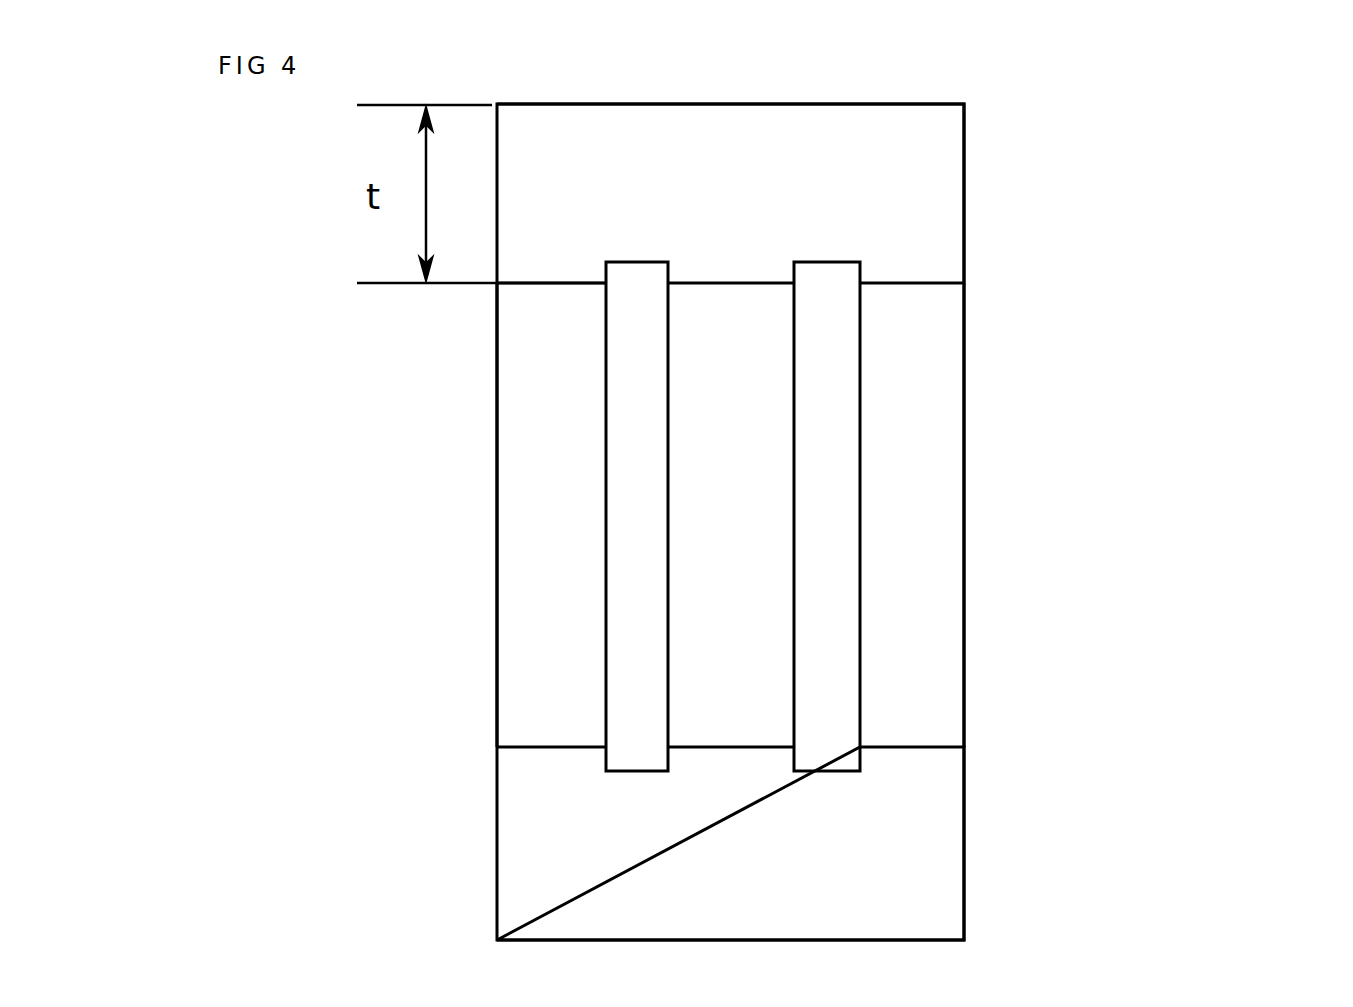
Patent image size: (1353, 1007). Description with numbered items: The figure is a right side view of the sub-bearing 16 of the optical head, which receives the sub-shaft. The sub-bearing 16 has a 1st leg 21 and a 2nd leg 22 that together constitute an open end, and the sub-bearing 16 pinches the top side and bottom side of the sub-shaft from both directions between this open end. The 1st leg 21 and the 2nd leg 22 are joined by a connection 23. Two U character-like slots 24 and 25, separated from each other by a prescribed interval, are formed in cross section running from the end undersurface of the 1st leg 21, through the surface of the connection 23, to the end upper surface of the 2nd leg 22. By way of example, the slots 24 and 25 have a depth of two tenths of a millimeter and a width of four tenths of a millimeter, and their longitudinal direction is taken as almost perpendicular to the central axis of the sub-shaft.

The sub-bearing 16 is at (1338, 103).
The 1st leg 21 is at (935, 218).
The 2nd leg 22 is at (940, 888).
The connection 23 is at (920, 608).
The slot 24 is at (612, 378).
The slot 25 is at (855, 388).